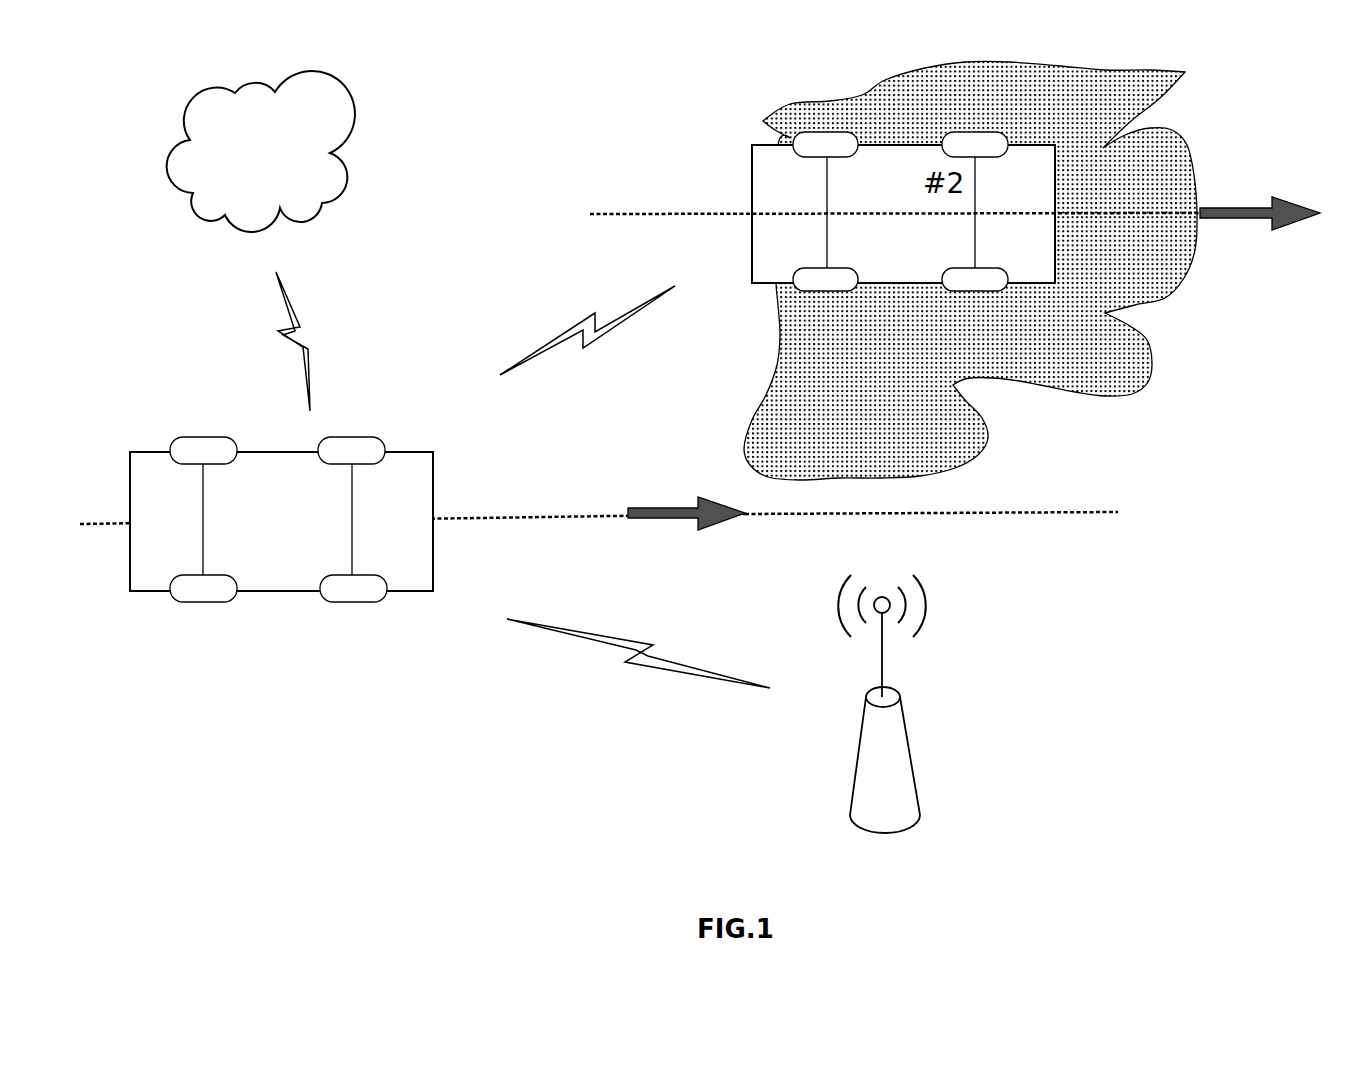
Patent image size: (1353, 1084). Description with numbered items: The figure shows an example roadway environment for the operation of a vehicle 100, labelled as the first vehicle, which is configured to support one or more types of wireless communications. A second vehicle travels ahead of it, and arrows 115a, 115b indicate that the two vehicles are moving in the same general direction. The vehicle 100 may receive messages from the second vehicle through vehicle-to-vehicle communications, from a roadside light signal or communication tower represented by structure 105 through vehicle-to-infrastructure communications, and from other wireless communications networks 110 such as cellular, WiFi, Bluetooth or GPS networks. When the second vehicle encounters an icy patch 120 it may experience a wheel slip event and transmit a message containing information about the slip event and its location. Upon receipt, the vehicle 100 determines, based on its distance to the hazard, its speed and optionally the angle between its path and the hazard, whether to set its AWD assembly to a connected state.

The vehicle 100 is at (157, 543).
The structure 105 is at (900, 763).
The wireless communications networks 110 is at (261, 151).
The arrow 115a is at (680, 537).
The arrow 115b is at (1260, 229).
The icy patch 120 is at (1055, 385).